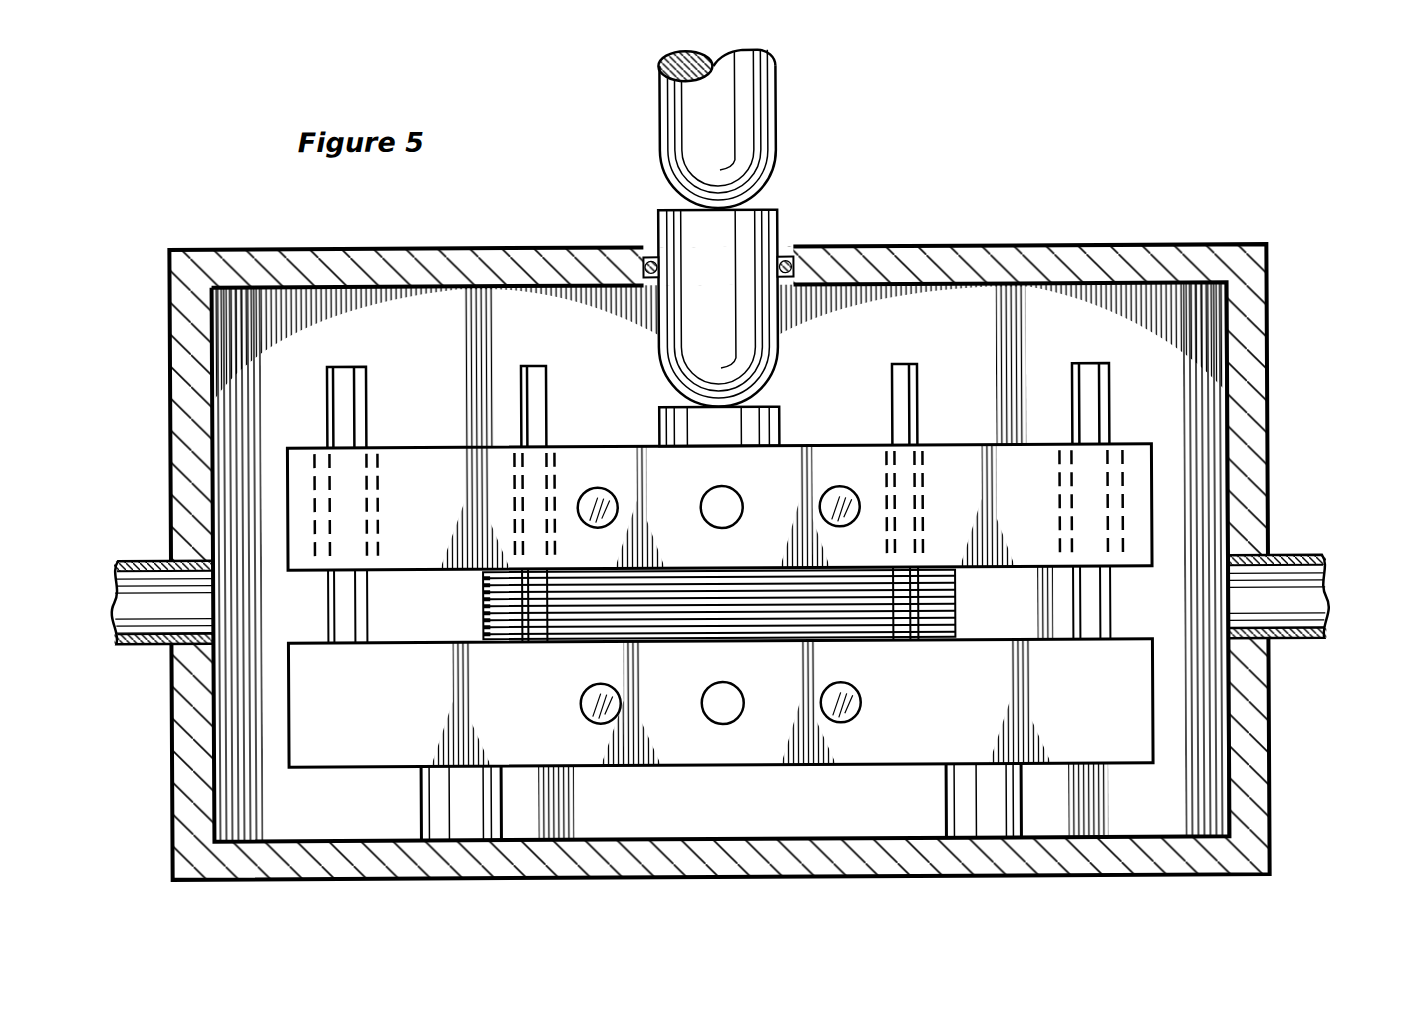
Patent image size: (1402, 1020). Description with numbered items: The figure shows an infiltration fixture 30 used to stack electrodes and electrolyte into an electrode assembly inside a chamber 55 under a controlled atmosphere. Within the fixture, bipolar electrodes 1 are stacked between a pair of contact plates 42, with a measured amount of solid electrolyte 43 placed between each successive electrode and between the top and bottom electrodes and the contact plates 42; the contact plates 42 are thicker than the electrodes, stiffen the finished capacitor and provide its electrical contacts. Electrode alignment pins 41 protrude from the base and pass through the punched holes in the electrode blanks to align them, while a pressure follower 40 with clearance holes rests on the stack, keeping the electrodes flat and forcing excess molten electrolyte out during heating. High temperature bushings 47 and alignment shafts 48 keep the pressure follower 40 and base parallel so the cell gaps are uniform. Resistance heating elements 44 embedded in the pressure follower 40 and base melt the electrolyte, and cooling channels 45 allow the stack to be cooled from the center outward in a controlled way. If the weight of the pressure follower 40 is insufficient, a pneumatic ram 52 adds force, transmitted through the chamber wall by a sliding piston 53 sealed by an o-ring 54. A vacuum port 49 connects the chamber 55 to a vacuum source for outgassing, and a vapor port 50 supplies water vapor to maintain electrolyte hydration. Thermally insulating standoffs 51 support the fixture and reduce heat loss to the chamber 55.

The bipolar electrode 1 is at (486, 617).
The infiltration fixture 30 is at (1036, 92).
The pressure follower 40 is at (950, 458).
The electrode alignment pin 41 is at (540, 388).
The contact plate 42 is at (717, 606).
The solid electrolyte 43 is at (486, 582).
The resistance heating element 44 is at (850, 500).
The cooling channel 45 is at (728, 515).
The high temperature bushing 47 is at (318, 520).
The alignment shaft 48 is at (348, 380).
The vacuum port 49 is at (1292, 578).
The vapor port 50 is at (146, 590).
The thermally insulating standoff 51 is at (762, 432).
The pneumatic ram 52 is at (750, 128).
The sliding piston 53 is at (732, 330).
The o-ring 54 is at (656, 250).
The chamber 55 is at (1170, 242).